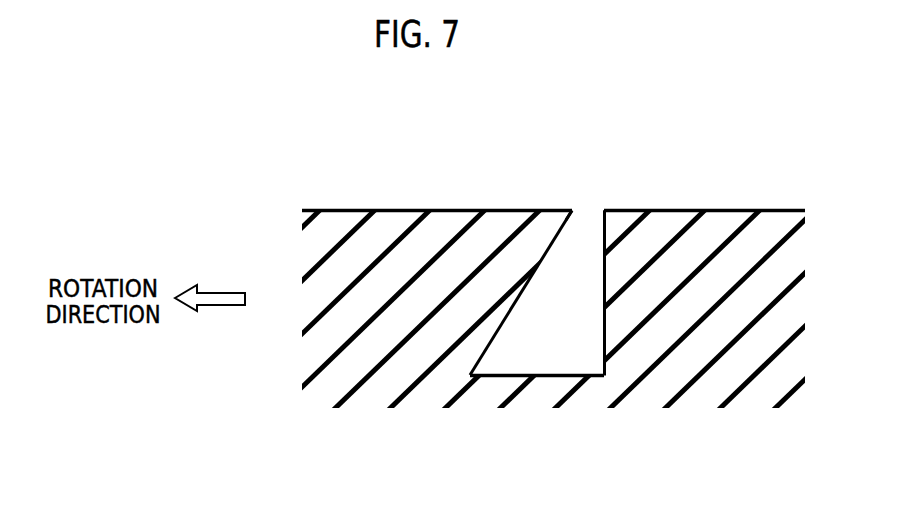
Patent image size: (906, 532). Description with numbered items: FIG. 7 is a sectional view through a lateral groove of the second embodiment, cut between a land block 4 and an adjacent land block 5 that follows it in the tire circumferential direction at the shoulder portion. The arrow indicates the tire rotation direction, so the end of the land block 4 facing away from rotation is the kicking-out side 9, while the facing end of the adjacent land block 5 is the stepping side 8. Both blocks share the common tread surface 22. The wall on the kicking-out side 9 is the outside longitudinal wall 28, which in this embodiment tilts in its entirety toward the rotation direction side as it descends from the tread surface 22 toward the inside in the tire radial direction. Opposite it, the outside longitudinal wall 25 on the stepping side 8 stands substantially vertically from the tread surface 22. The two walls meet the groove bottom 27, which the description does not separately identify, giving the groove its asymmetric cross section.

The land block 4 is at (408, 209).
The adjacent land block 5 is at (743, 207).
The kicking-out side 9 is at (504, 218).
The stepping side 8 is at (660, 218).
The tread surface 22 is at (560, 212).
The outside longitudinal wall 28 is at (511, 327).
The bottom of groove 27 is at (552, 378).
The outside longitudinal wall 25 is at (607, 341).